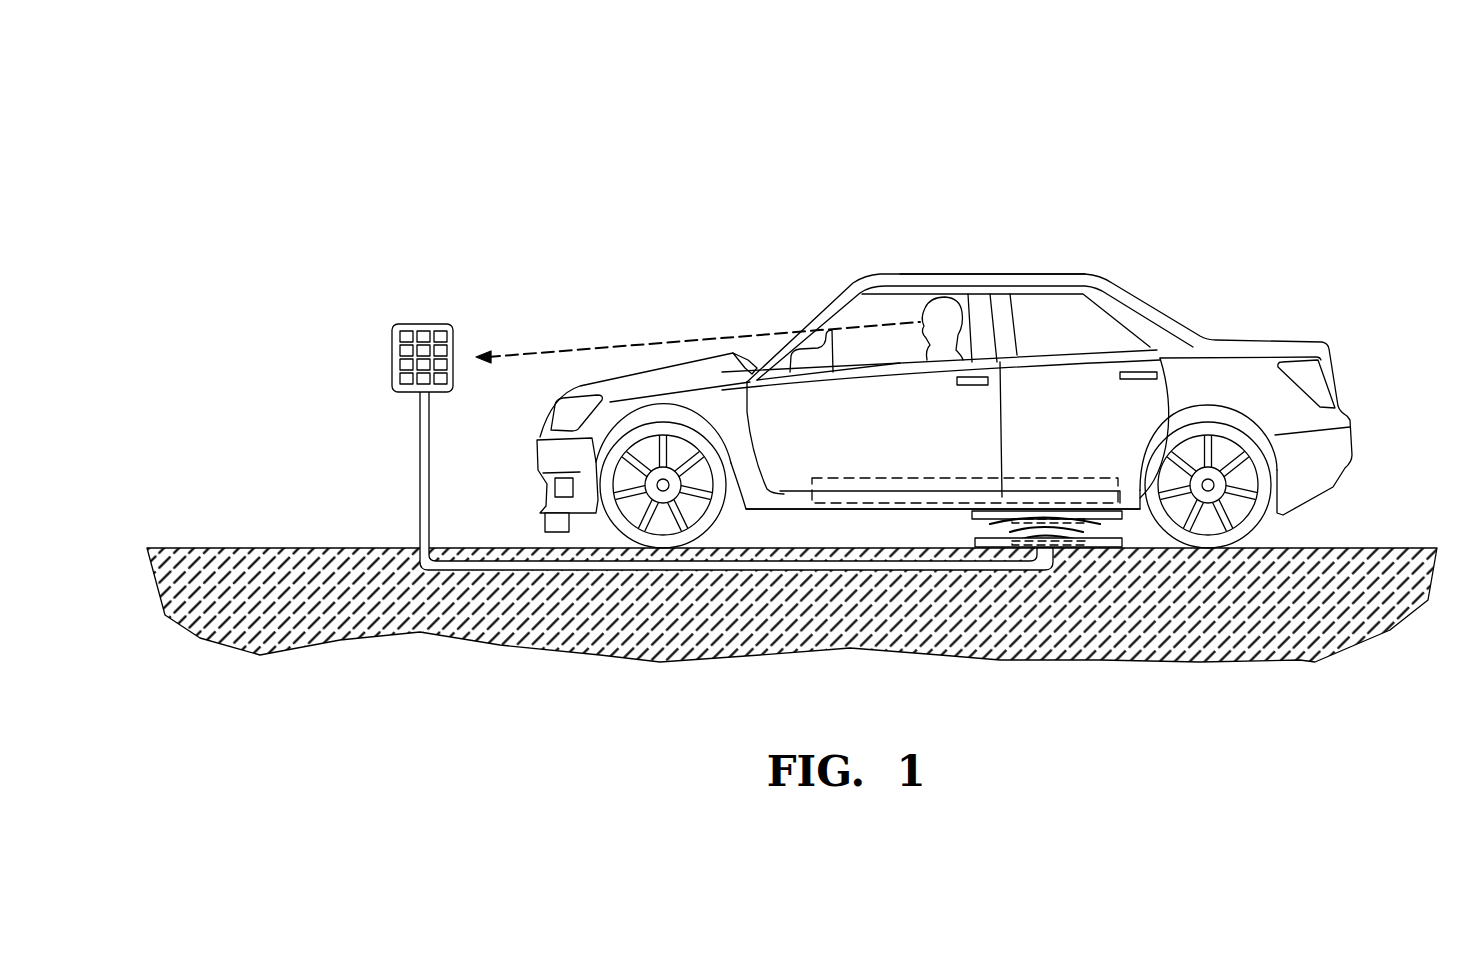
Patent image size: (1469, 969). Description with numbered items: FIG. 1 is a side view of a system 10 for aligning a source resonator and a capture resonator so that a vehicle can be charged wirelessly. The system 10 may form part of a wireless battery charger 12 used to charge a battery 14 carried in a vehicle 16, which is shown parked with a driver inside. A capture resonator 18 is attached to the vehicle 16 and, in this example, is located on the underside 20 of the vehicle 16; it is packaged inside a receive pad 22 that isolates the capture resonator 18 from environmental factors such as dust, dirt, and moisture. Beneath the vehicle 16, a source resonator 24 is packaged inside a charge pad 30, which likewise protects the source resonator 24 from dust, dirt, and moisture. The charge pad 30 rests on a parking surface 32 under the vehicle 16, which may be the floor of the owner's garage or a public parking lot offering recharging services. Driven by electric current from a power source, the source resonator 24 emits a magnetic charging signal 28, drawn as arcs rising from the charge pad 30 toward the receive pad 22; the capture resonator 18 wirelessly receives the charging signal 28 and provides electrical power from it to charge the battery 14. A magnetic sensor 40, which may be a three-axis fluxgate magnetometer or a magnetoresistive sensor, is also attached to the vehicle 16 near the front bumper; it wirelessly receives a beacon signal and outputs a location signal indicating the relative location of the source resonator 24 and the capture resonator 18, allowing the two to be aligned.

The system 10 is at (1069, 197).
The wireless battery charger 12 is at (452, 343).
The battery 14 is at (1092, 482).
The vehicle 16 is at (1131, 282).
The capture resonator 18 is at (992, 525).
The underside 20 is at (778, 512).
The receive pad 22 is at (1122, 513).
The source resonator 24 is at (1038, 545).
The magnetic charging signal 28 is at (1065, 530).
The charge pad 30 is at (991, 547).
The parking surface 32 is at (1398, 547).
The magnetic sensor 40 is at (549, 532).